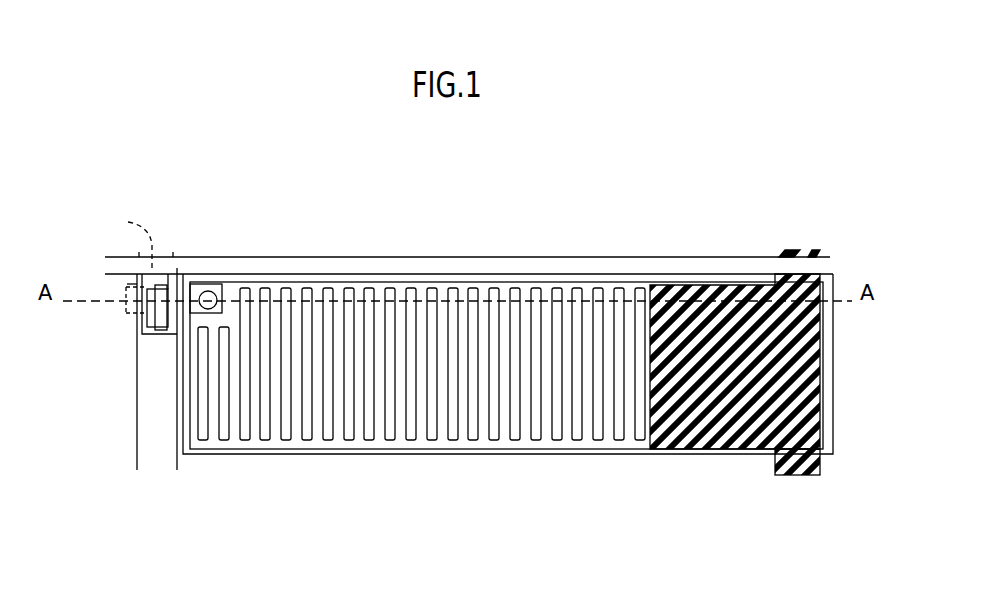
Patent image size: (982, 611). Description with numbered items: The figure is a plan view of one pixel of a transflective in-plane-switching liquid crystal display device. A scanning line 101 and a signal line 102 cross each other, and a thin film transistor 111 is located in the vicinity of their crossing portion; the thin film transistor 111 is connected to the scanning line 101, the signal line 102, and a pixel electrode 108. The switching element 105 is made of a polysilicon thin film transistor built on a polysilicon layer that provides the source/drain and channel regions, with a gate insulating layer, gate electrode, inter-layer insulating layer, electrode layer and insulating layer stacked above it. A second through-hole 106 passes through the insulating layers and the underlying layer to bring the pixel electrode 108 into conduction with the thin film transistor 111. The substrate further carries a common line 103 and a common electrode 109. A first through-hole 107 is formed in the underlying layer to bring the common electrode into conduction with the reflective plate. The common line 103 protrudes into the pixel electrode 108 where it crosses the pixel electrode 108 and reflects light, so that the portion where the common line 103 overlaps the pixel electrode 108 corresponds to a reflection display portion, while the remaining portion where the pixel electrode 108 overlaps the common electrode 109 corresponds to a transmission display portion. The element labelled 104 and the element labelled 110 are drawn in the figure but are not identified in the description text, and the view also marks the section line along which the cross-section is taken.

The scanning line 101 is at (148, 423).
The signal line 102 is at (368, 267).
The common line 103 is at (792, 473).
The thin film transistor semiconductor layer 104 is at (183, 327).
The switching element 105 is at (172, 318).
The second through-hole 106 is at (207, 304).
The first through-hole 107 is at (790, 273).
The pixel electrode 108 is at (337, 440).
The common electrode 109 is at (437, 455).
The counter electrode 110 is at (597, 437).
The thin film transistor 111 is at (132, 233).